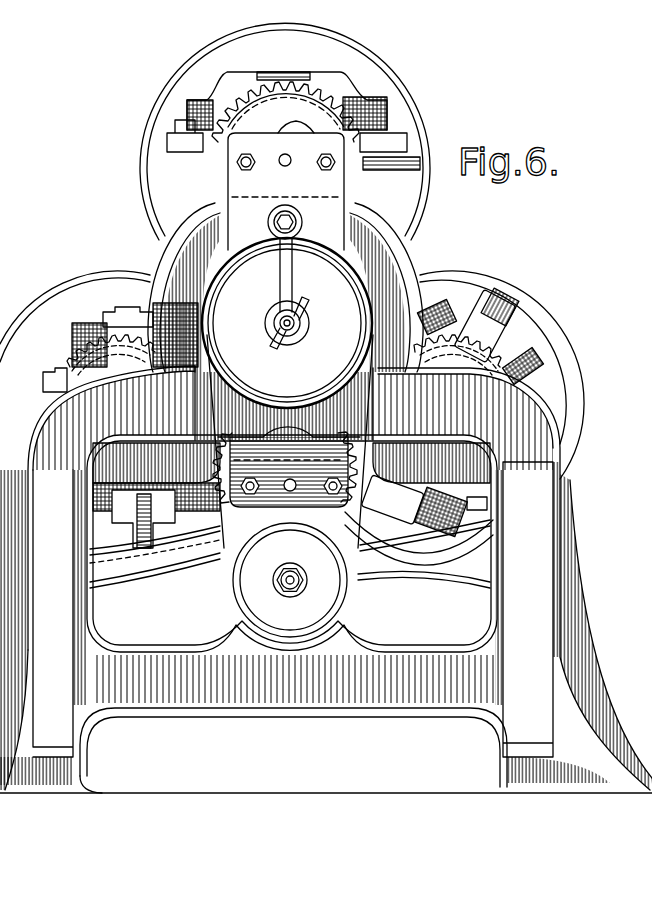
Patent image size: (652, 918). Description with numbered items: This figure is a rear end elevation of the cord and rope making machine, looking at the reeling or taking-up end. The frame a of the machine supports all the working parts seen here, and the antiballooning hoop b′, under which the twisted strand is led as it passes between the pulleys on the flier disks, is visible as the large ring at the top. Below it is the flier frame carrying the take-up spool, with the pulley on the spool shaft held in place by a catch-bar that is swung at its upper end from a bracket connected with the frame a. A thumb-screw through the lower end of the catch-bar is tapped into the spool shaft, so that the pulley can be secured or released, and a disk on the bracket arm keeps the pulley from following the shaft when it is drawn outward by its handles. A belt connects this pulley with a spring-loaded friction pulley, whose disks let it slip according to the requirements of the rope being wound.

The frame a is at (326, 579).
The antiballooning hoop b′ is at (424, 197).